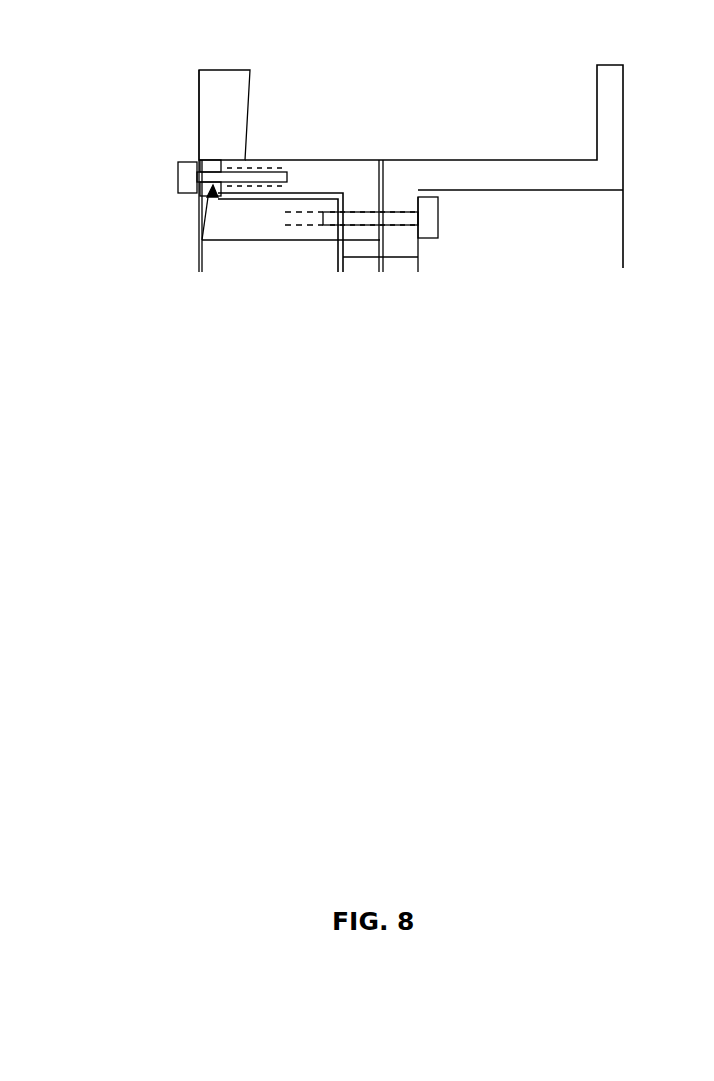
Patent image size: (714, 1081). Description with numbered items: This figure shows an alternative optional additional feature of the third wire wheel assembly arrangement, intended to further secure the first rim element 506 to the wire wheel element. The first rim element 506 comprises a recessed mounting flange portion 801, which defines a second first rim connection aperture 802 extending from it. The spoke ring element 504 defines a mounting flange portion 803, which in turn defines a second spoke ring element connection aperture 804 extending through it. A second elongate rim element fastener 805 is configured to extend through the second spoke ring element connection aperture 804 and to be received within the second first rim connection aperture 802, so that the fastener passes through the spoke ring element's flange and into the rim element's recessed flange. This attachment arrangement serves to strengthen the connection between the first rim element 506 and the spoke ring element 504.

The first rim element 506 is at (337, 182).
The spoke ring element 504 is at (305, 240).
The recessed mounting flange portion 801 is at (227, 160).
The second first rim connection aperture 802 is at (280, 162).
The mounting flange portion 803 is at (199, 226).
The second spoke ring element connection aperture 804 is at (211, 198).
The second elongate rim element fastener 805 is at (178, 173).